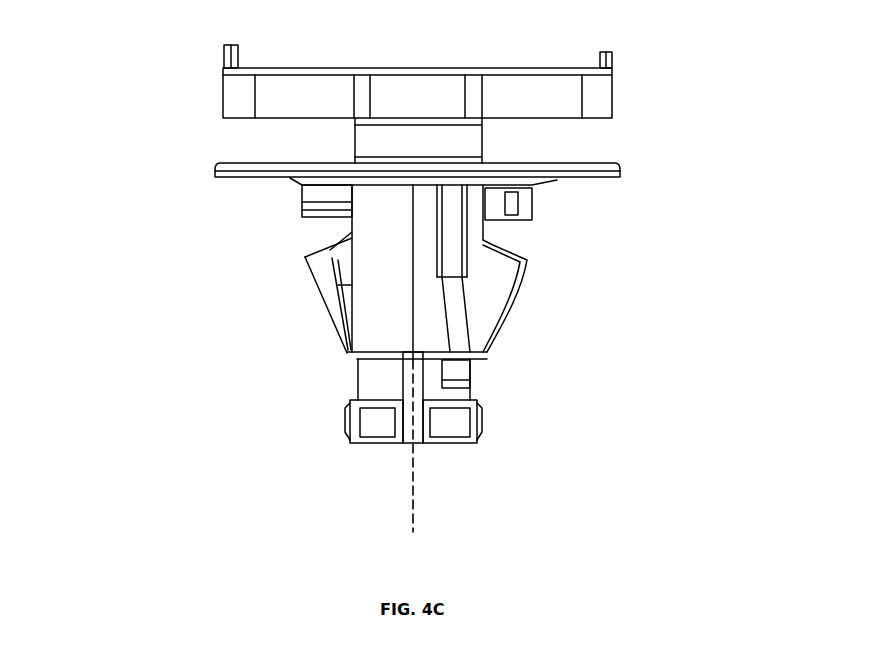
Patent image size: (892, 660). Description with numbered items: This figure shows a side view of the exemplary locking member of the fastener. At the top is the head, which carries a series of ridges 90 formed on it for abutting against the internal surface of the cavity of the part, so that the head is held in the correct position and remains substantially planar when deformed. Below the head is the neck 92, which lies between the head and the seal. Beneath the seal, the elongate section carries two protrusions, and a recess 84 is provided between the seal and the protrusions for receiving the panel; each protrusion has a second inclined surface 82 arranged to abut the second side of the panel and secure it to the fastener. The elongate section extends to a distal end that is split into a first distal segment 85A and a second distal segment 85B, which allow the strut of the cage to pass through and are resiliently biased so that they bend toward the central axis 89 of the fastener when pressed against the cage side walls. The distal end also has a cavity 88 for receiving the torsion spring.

The ridges 90 is at (224, 46).
The neck 92 is at (482, 137).
The second inclined surface 82 is at (307, 251).
The recess 84 is at (525, 230).
The first distal segment 85A is at (350, 420).
The second distal segment 85B is at (477, 420).
The cavity 88 is at (407, 447).
The central axis 89 is at (413, 495).